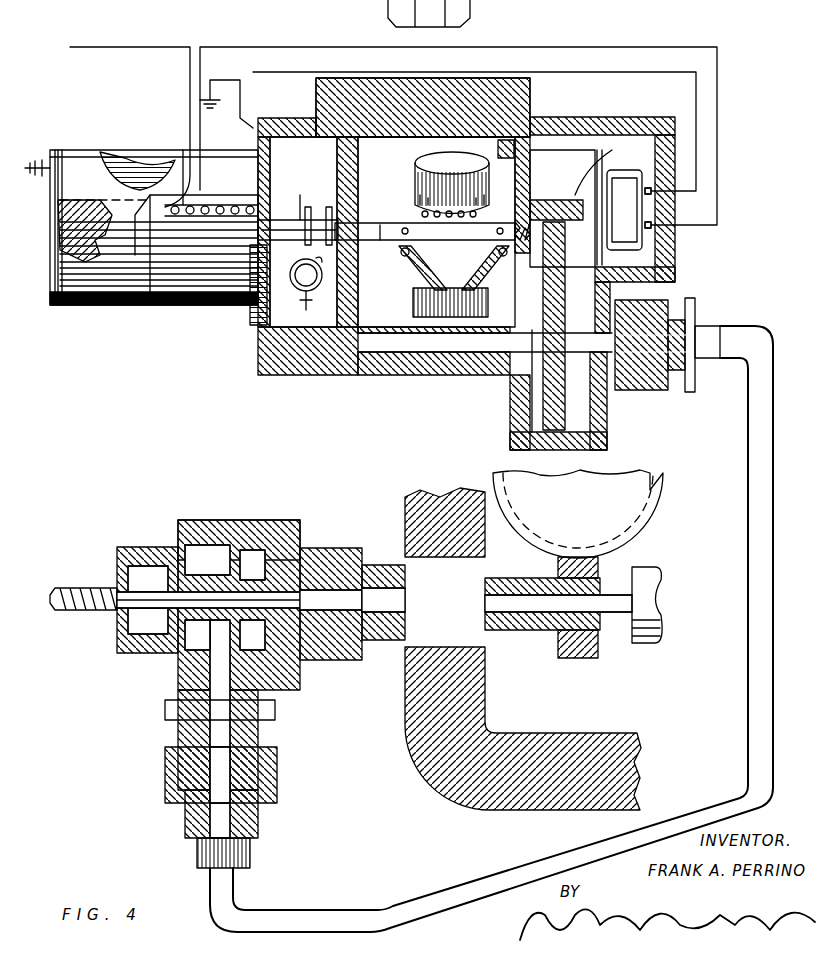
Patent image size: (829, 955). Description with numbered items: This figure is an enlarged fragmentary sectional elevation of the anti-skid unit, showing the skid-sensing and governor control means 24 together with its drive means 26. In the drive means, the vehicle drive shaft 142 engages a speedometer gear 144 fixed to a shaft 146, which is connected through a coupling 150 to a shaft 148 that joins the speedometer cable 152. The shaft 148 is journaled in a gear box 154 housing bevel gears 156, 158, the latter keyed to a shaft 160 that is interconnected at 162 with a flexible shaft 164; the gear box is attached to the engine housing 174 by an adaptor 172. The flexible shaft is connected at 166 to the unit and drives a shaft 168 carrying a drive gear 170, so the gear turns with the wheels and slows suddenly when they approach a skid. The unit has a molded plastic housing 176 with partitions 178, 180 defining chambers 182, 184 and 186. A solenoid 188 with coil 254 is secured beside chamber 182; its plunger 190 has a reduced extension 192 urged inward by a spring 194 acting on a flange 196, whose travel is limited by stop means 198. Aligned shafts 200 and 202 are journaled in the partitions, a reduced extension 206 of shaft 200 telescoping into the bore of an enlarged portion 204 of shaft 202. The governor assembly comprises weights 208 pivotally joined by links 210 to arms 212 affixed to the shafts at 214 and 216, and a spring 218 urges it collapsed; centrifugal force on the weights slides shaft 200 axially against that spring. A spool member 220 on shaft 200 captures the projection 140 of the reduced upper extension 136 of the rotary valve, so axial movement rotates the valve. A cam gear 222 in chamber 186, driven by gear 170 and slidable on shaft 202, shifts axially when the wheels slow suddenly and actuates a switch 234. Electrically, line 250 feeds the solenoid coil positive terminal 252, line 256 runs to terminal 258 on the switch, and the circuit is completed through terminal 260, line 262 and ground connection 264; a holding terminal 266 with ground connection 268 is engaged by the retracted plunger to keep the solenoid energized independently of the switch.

The skid-sensing and governor control means 24 is at (408, 393).
The drive means 26 is at (141, 707).
The reduced upper extension 136 is at (305, 290).
The projection 140 is at (318, 259).
The vehicle drive shaft 142 is at (656, 488).
The speedometer gear 144 is at (598, 640).
The shaft 146 is at (604, 597).
The shaft 148 is at (298, 562).
The coupling 150 is at (373, 567).
The speedometer cable 152 is at (68, 588).
The gear box 154 is at (222, 520).
The bevel gear 156 is at (250, 555).
The bevel gear 158 is at (205, 650).
The shaft 160 is at (268, 706).
The driving interconnection 162 is at (278, 758).
The flexible shaft 164 is at (310, 916).
The connection 166 is at (677, 388).
The shaft 168 is at (492, 343).
The drive gear 170 is at (568, 413).
The adaptor 172 is at (397, 640).
The engine housing 174 is at (447, 773).
The housing 176 is at (505, 92).
The partition 178 is at (337, 168).
The partition 180 is at (500, 146).
The chamber 182 is at (300, 195).
The chamber 184 is at (374, 156).
The chamber 186 is at (548, 212).
The solenoid 188 is at (80, 150).
The plunger 190 is at (150, 262).
The reduced extension 192 is at (282, 220).
The spring 194 is at (192, 262).
The flange 196 is at (275, 185).
The stop means 198 is at (250, 320).
The shaft 200 is at (380, 224).
The shaft 202 is at (556, 201).
The enlarged portion 204 is at (466, 293).
The reduced extension 206 is at (430, 262).
The weights 208 is at (441, 171).
The links 210 is at (395, 222).
The arms 212 is at (400, 243).
The attachment point 214 is at (415, 216).
The attachment point 216 is at (497, 220).
The spring 218 is at (452, 194).
The spool member 220 is at (316, 212).
The cam gear 222 is at (590, 178).
The switch 234 is at (614, 215).
The line 250 is at (110, 47).
The solenoid coil positive terminal 252 is at (183, 150).
The solenoid coil 254 is at (128, 150).
The line 256 is at (236, 47).
The terminal 258 is at (660, 237).
The terminal 260 is at (652, 190).
The line 262 is at (620, 73).
The ground connection 264 is at (220, 100).
The terminal 266 is at (55, 250).
The ground connection 268 is at (42, 160).